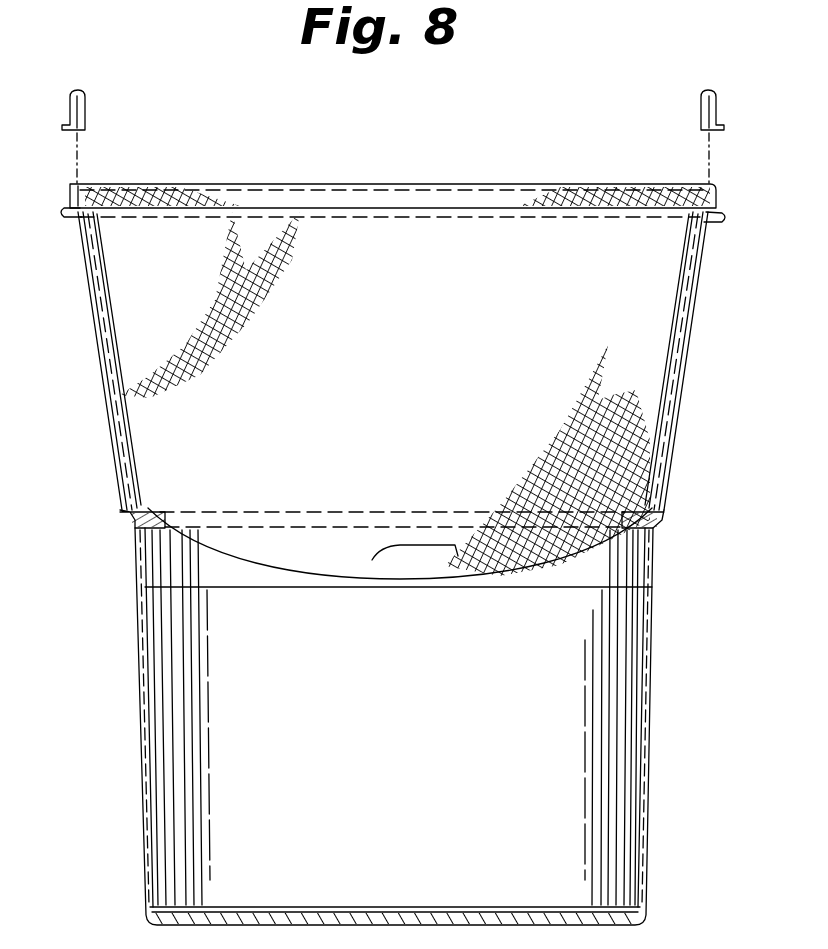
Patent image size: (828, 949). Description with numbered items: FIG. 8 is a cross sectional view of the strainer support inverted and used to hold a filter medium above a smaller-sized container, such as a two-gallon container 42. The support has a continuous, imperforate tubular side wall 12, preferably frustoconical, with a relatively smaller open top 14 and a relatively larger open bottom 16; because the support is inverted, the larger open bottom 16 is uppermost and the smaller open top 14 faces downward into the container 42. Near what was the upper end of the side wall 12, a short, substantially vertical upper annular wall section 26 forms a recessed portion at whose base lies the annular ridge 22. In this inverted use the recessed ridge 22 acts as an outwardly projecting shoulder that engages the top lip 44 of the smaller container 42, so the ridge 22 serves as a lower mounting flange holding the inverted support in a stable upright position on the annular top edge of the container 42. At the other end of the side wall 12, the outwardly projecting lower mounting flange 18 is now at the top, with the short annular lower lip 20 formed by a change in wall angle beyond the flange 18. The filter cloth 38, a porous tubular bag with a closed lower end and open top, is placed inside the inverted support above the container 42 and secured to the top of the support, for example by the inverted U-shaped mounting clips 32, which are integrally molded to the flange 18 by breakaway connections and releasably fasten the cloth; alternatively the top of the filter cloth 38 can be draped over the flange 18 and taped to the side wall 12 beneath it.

The tubular side wall 12 is at (680, 403).
The open top 14 is at (436, 592).
The open bottom 16 is at (326, 183).
The lower mounting flange 18 is at (714, 208).
The lower lip 20 is at (96, 187).
The annular ridge 22 is at (660, 528).
The upper annular wall section 26 is at (642, 558).
The mounting clip 32 is at (88, 111).
The filter cloth 38 is at (372, 560).
The smaller container 42 is at (655, 633).
The top lip 44 is at (125, 520).